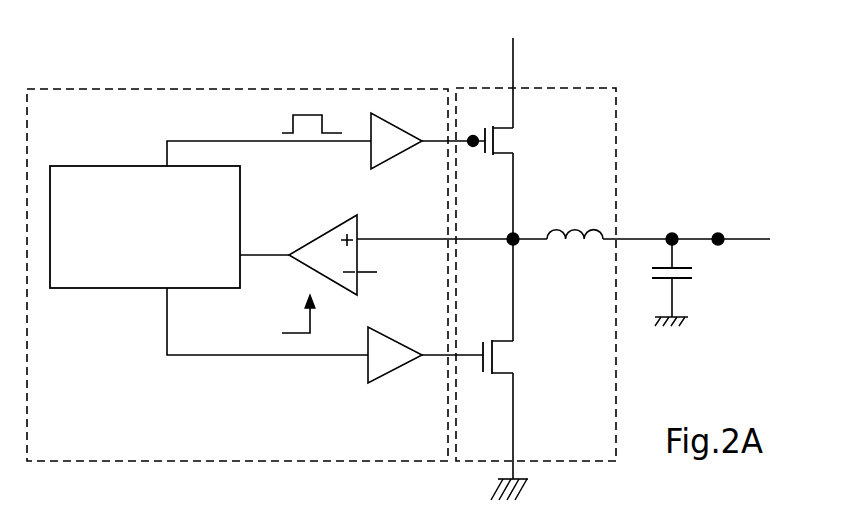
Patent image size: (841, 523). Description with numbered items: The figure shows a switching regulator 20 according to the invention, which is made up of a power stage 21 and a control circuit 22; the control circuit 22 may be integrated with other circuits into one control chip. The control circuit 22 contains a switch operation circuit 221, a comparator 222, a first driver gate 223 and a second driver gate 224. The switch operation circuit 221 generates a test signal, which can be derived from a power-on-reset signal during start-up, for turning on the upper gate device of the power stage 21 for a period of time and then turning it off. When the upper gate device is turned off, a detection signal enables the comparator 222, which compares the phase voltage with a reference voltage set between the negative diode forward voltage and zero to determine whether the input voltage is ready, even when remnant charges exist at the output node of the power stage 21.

The switching regulator 20 is at (659, 101).
The power stage 21 is at (604, 446).
The control circuit 22 is at (423, 446).
The switch operation circuit 221 is at (165, 283).
The comparator 222 is at (340, 225).
The first driver gate 223 is at (386, 121).
The second driver gate 224 is at (388, 337).